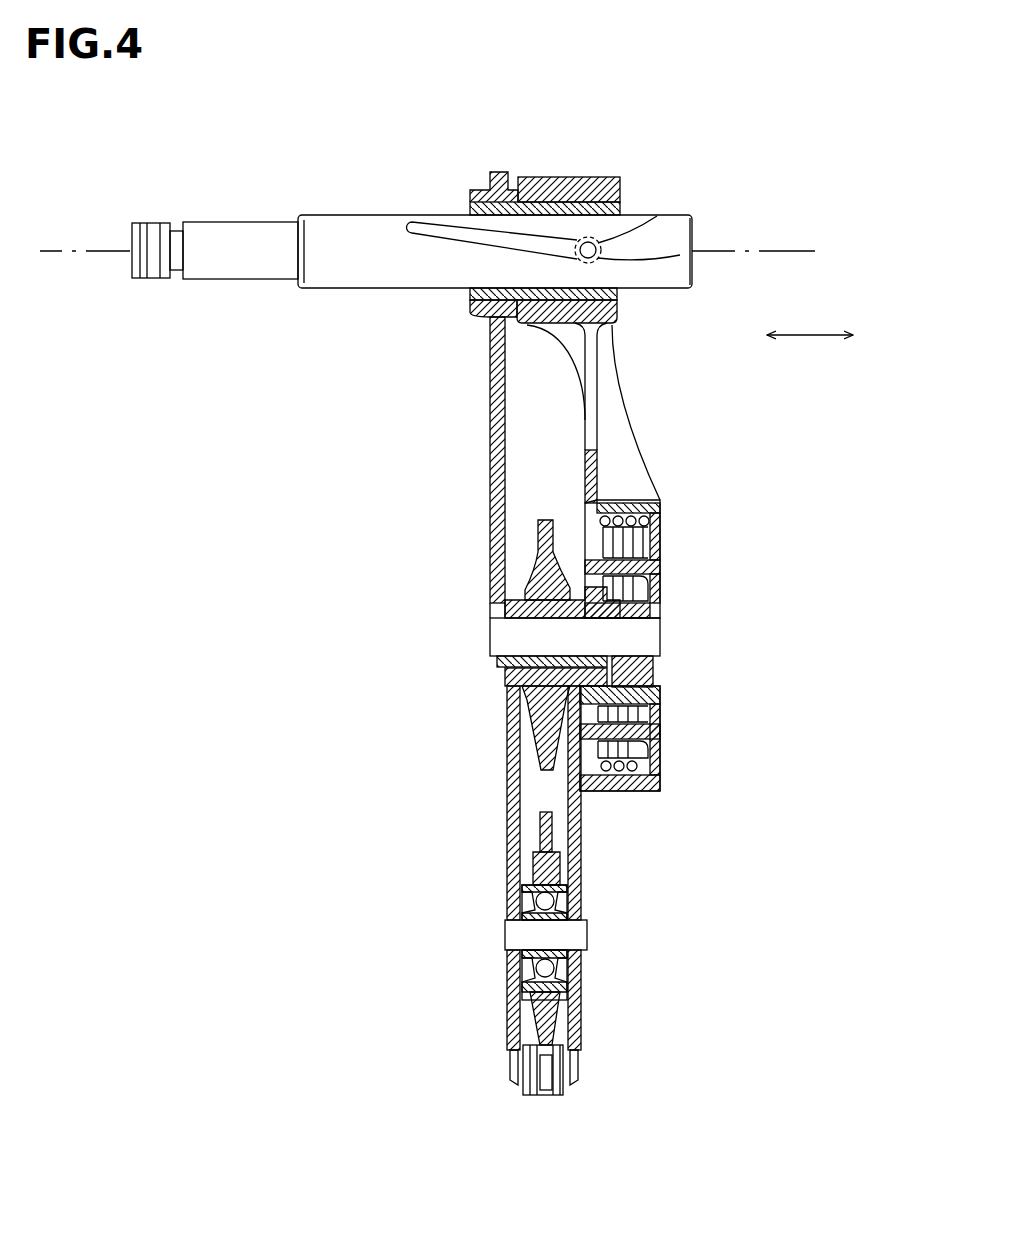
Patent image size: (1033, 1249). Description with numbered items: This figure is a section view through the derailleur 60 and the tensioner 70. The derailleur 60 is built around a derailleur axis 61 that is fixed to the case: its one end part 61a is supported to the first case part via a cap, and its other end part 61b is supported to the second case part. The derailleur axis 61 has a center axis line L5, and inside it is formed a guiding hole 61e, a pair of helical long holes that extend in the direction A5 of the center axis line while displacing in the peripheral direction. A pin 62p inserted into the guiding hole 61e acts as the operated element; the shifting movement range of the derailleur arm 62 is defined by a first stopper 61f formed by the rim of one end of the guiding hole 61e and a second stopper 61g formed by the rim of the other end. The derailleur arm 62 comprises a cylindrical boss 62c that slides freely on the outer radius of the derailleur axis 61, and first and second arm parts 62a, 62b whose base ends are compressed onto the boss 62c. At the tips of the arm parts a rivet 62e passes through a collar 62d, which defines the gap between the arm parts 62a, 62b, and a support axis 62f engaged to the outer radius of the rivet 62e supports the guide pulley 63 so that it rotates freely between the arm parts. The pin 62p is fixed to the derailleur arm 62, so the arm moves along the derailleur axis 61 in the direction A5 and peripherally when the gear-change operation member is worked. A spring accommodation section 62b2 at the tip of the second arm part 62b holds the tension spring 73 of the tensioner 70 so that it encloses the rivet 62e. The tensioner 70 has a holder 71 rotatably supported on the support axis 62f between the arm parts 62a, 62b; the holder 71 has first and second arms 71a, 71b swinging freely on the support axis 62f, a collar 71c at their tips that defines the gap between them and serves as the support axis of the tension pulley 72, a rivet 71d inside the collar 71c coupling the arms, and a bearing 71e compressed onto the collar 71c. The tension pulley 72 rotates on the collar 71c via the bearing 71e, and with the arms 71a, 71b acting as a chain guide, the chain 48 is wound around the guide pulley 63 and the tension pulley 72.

The derailleur 60 is at (775, 147).
The derailleur axis 61 is at (469, 238).
The one end part of the derailleur axis 61a is at (222, 235).
The other end part of the derailleur axis 61b is at (672, 282).
The guiding hole 61e is at (490, 230).
The first stopper 61f is at (695, 233).
The second stopper 61g is at (415, 228).
The derailleur arm 62 is at (599, 468).
The first arm part 62a is at (495, 405).
The second arm part 62b is at (600, 463).
The spring accommodation section 62b2 is at (632, 792).
The cylindrical boss 62c is at (613, 183).
The collar 62d is at (525, 670).
The rivet 62e is at (660, 634).
The support axis 62f is at (525, 630).
The pin 62p is at (600, 240).
The guide pulley 63 is at (545, 582).
The tensioner 70 is at (524, 918).
The holder 71 is at (549, 838).
The first arm 71a is at (520, 852).
The second arm 71b is at (582, 852).
The collar 71c is at (590, 937).
The rivet 71d is at (525, 940).
The bearing 71e is at (582, 1000).
The tension pulley 72 is at (520, 1015).
The tension spring 73 is at (632, 750).
The chain 48 is at (563, 1092).
The center axis line L5 is at (795, 247).
The direction of the center axis line A5 is at (810, 335).